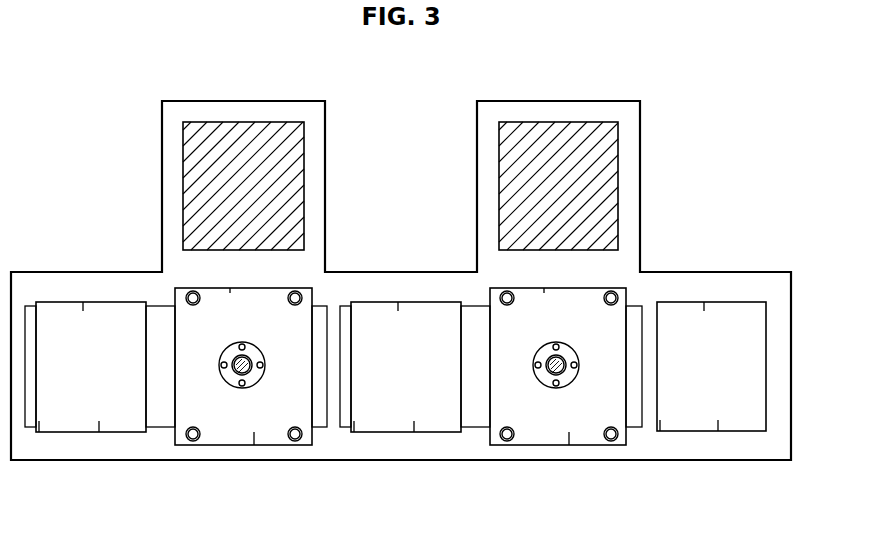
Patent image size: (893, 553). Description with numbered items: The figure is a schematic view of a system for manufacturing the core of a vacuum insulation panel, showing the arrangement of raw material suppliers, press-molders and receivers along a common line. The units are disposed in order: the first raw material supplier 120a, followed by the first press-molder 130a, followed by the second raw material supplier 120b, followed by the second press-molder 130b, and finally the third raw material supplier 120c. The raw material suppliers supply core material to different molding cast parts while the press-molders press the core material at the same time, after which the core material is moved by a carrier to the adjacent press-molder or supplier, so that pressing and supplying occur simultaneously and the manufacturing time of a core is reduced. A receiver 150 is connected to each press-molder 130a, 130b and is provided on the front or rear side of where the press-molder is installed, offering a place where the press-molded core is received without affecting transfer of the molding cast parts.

The receiver 150 is at (250, 130).
The first raw material supplier 120a is at (62, 313).
The second raw material supplier 120b is at (378, 313).
The third raw material supplier 120c is at (725, 313).
The first press-molder 130a is at (233, 430).
The second press-molder 130b is at (551, 430).